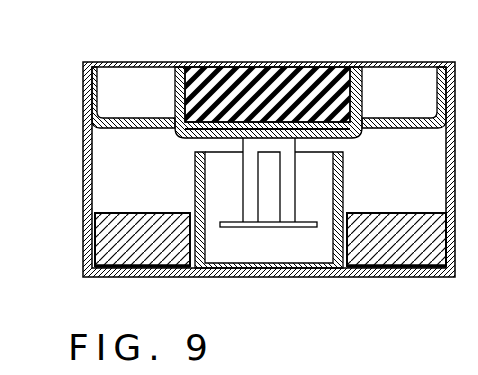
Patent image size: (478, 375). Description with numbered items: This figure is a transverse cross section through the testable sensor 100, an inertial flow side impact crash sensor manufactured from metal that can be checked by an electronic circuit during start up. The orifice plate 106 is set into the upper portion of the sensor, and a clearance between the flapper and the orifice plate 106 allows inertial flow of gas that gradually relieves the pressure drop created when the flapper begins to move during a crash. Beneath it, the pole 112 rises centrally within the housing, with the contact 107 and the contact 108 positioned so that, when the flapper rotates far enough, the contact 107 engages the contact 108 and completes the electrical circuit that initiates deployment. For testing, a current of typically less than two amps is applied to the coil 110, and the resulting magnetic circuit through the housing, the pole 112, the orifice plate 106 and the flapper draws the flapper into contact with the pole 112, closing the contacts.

The testable sensor 100 is at (76, 66).
The orifice plate 106 is at (267, 62).
The contact 107 is at (297, 175).
The contact 108 is at (279, 204).
The coil 110 is at (366, 256).
The pole 112 is at (195, 176).